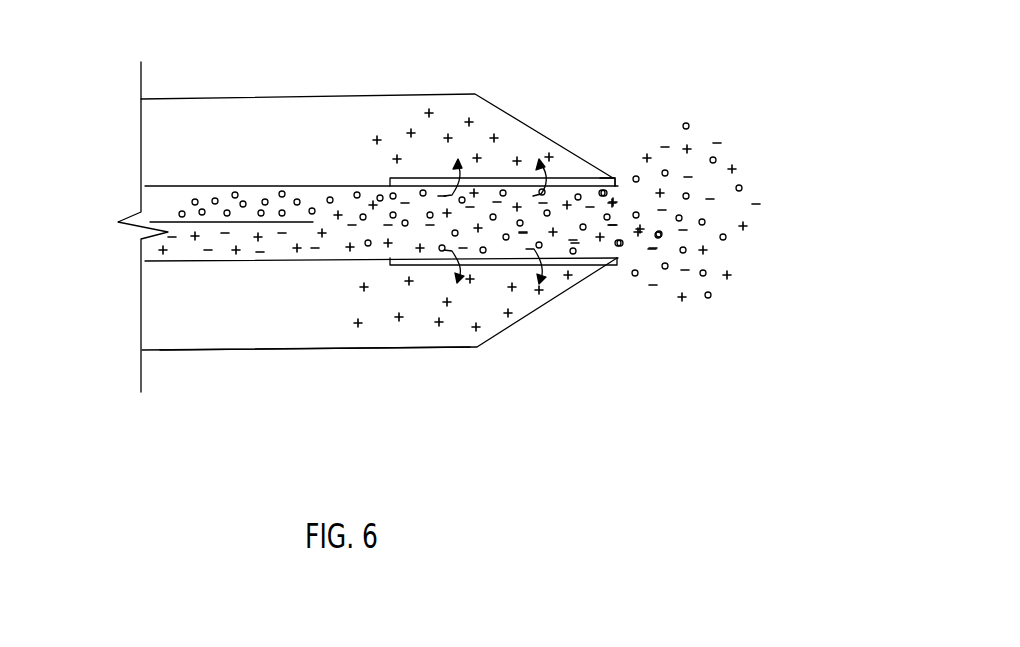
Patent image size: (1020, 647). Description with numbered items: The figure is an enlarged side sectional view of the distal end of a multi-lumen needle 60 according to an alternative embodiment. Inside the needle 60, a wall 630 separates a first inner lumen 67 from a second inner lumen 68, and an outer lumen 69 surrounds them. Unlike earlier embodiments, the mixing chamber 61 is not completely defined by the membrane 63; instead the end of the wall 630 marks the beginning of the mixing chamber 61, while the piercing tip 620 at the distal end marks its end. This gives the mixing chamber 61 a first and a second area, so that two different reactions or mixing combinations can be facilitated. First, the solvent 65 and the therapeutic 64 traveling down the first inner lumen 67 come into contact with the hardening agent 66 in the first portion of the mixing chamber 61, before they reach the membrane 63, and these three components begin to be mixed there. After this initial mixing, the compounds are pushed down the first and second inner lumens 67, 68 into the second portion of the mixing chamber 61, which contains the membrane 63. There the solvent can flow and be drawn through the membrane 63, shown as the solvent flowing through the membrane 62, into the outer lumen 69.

The needle 60 is at (345, 60).
The mixing chamber 61 is at (337, 238).
The solvent flowing through the membrane 62 is at (543, 177).
The piercing tip 620 is at (612, 177).
The membrane 63 is at (590, 266).
The wall 630 is at (313, 222).
The therapeutic 64 is at (260, 252).
The solvent 65 is at (195, 239).
The hardening agent 66 is at (222, 192).
The first inner lumen 67 is at (150, 247).
The second inner lumen 68 is at (157, 200).
The outer lumen 69 is at (258, 322).